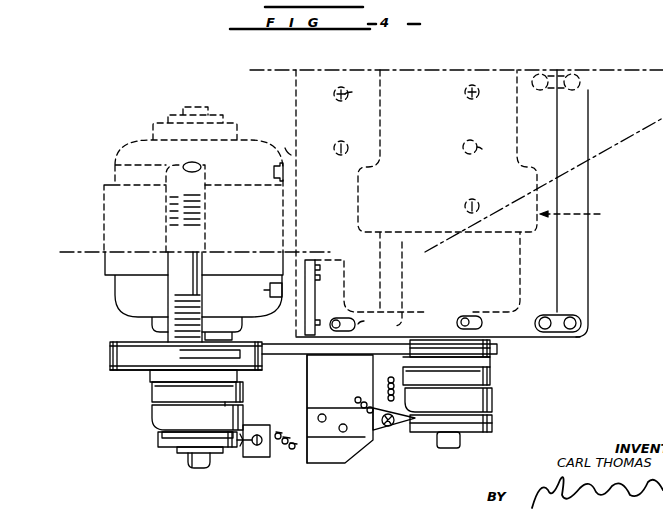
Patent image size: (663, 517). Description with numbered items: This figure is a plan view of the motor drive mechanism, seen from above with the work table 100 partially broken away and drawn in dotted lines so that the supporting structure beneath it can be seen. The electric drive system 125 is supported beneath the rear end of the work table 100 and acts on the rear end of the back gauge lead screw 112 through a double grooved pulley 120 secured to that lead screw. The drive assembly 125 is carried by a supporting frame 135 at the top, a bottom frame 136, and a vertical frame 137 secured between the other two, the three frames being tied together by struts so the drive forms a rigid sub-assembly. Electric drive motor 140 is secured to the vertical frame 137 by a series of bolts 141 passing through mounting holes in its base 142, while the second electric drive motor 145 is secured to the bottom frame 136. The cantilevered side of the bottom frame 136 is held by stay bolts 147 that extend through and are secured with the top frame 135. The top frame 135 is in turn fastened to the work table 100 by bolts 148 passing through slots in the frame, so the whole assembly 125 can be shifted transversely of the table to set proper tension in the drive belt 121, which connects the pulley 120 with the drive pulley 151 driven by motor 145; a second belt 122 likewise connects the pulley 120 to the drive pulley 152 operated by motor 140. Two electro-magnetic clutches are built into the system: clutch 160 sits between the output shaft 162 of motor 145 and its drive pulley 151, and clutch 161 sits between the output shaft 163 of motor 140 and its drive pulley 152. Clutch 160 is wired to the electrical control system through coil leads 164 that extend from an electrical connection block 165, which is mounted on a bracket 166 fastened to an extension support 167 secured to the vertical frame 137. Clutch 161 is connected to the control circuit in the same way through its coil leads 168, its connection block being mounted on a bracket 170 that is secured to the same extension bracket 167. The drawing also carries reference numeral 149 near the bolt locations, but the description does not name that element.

The work table 100 is at (598, 68).
The back gauge lead screw 112 is at (206, 237).
The double grooved pulley 120 is at (117, 342).
The drive belt 121 is at (289, 356).
The belt 122 is at (118, 372).
The electric drive system 125 is at (438, 203).
The supporting frame 135 is at (538, 280).
The bottom frame 136 is at (583, 298).
The vertical frame 137 is at (305, 327).
The electric drive motor 140 is at (144, 170).
The bolts 141 is at (272, 172).
The base 142 is at (288, 150).
The electric drive motor 145 is at (584, 213).
The stay bolts 147 is at (576, 91).
The bolts 148 is at (347, 318).
The bolt hole 149 is at (358, 86).
The drive pulley 151 is at (497, 354).
The drive pulley 152 is at (146, 384).
The electro-magnetic clutch 160 is at (507, 400).
The electro-magnetic clutch 161 is at (149, 446).
The output shaft 162 is at (465, 446).
The output shaft 163 is at (200, 468).
The coil leads 164 is at (388, 385).
The electrical connection block 165 is at (390, 432).
The bracket 166 is at (352, 434).
The extension support 167 is at (307, 388).
The coil leads 168 is at (304, 421).
The bracket 170 is at (258, 458).